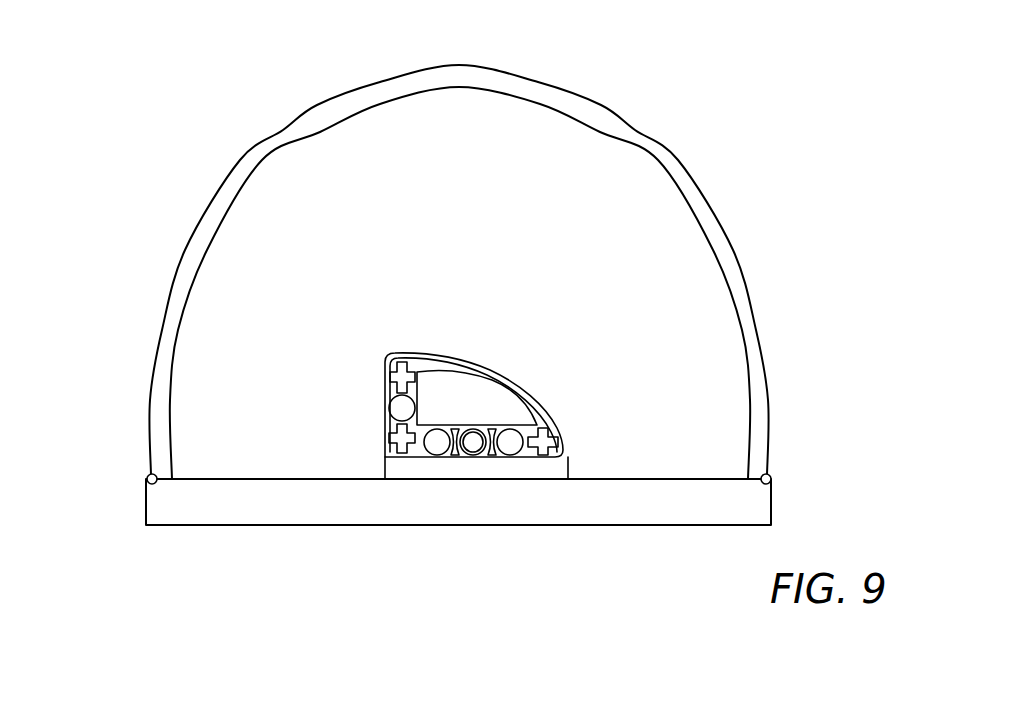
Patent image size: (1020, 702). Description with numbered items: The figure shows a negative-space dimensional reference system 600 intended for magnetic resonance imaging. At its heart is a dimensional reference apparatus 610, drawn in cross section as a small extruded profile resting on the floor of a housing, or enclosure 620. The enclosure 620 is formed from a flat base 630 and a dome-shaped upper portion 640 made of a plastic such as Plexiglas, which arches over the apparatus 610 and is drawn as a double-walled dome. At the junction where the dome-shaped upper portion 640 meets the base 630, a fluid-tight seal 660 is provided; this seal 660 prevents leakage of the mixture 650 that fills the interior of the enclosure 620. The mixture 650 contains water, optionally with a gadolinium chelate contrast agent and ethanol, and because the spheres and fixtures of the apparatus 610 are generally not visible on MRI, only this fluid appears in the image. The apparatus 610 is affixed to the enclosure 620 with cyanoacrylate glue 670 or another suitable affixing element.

The dimensional reference system 600 is at (150, 210).
The dimensional reference apparatus 610 is at (495, 345).
The enclosure 620 is at (756, 281).
The base 630 is at (379, 513).
The dome-shaped upper portion 640 is at (512, 67).
The mixture 650 is at (310, 213).
The fluid-tight seal 660 is at (147, 479).
The cyanoacrylate glue 670 is at (558, 470).